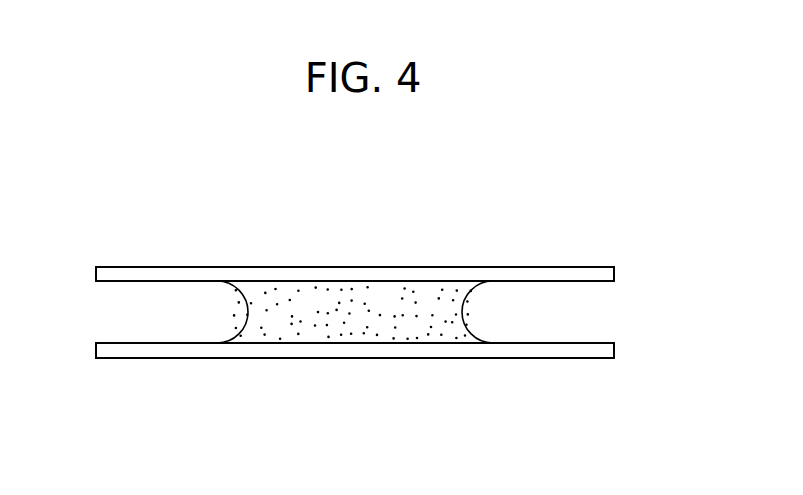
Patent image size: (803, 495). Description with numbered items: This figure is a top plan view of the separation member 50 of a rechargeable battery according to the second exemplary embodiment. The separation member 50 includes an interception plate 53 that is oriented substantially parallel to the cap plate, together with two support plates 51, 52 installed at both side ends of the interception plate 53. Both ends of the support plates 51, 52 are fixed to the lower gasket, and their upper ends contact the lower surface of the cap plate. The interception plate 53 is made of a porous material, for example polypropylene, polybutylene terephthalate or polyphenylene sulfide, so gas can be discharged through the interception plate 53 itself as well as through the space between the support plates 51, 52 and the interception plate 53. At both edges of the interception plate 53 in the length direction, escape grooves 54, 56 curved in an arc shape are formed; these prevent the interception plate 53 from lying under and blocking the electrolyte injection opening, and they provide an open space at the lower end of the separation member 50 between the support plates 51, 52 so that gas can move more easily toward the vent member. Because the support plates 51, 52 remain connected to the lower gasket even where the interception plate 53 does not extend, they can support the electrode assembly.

The separation member 50 is at (555, 249).
The support plate 51 is at (283, 273).
The support plate 52 is at (381, 351).
The interception plate 53 is at (357, 293).
The escape groove 54 is at (248, 312).
The escape groove 56 is at (462, 312).